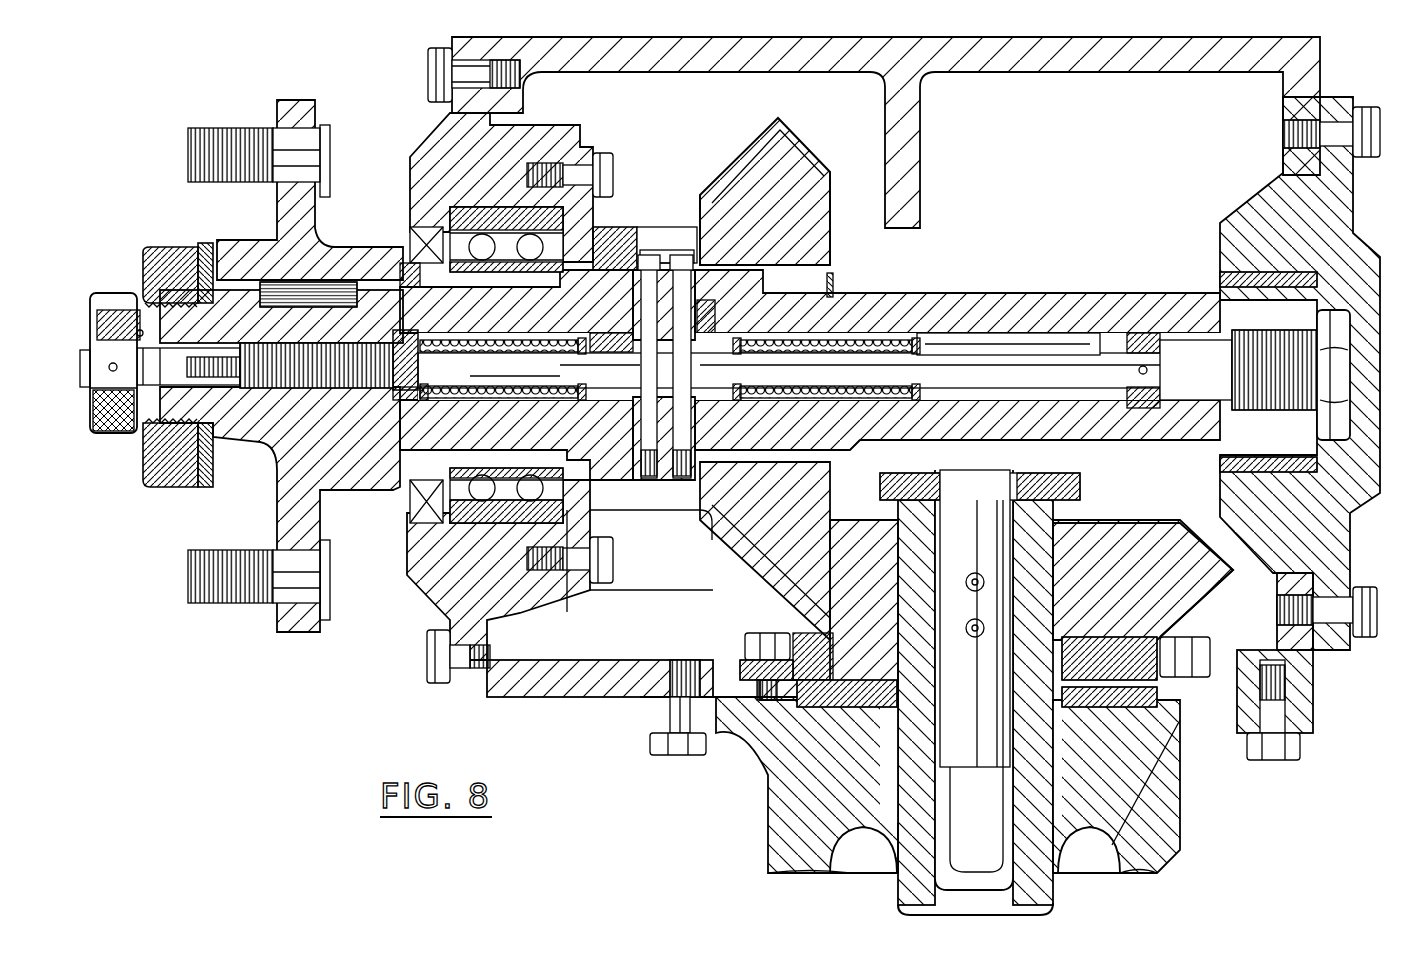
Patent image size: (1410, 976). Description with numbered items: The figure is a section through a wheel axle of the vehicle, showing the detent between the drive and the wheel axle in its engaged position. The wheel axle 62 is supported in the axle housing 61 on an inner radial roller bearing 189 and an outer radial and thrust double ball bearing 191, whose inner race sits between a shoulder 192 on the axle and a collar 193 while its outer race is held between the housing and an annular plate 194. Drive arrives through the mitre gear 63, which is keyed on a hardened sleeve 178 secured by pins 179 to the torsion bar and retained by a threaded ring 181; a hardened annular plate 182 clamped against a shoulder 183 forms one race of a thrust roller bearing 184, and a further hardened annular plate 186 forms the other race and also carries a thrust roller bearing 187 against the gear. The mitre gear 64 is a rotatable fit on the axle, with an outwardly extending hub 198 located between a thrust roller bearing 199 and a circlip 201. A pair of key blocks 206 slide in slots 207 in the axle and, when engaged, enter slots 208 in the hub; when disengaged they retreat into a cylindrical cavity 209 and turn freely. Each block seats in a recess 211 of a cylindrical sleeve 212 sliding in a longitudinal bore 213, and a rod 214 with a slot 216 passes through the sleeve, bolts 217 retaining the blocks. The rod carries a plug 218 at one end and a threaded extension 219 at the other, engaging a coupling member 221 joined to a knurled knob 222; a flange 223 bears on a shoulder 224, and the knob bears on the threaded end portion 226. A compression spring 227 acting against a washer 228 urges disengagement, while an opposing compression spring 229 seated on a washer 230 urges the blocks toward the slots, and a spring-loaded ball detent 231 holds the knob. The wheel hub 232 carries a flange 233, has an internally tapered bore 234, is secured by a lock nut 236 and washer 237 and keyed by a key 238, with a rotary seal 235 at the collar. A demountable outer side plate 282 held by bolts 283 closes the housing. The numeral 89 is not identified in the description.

The axle housing 61 is at (580, 700).
The wheel axle 62 is at (1072, 320).
The mitre gear 63 is at (795, 600).
The mitre gear 64 is at (740, 560).
The bore tube 89 is at (1000, 650).
The hardened sleeve 178 is at (1055, 575).
The pins 179 is at (985, 630).
The threaded ring 181 is at (1080, 490).
The hardened annular plate 182 is at (800, 710).
The shoulder 183 is at (865, 708).
The thrust roller bearing 184 is at (833, 672).
The hardened annular plate 186 is at (835, 655).
The thrust roller bearing 187 is at (812, 633).
The radial roller bearing 189 is at (1240, 285).
The radial and thrust double ball bearing 191 is at (470, 222).
The shoulder 192 is at (540, 195).
The collar 193 is at (392, 492).
The annular plate 194 is at (605, 165).
The hub 198 is at (640, 232).
The thrust roller bearing 199 is at (612, 228).
The circlip 201 is at (832, 274).
The key blocks 206 is at (636, 423).
The slots 207 is at (770, 310).
The slots 208 is at (652, 480).
The cylindrical cavity 209 is at (805, 262).
The recess 211 is at (760, 312).
The cylindrical sleeve 212 is at (615, 318).
The longitudinal bore 213 is at (825, 400).
The rod 214 is at (1005, 360).
The slot 216 is at (560, 398).
The bolts 217 is at (695, 420).
The plug 218 is at (1138, 332).
The threaded extension 219 is at (340, 388).
The coupling member 221 is at (262, 386).
The knurled knob 222 is at (120, 435).
The flange 223 is at (405, 330).
The shoulder 224 is at (400, 398).
The threaded end portion 226 is at (168, 465).
The compression spring 227 is at (505, 340).
The washer 228 is at (426, 398).
The compression spring 229 is at (870, 340).
The washer 230 is at (935, 345).
The spring-loaded ball detent 231 is at (122, 310).
The wheel hub 232 is at (365, 262).
The flange 233 is at (280, 205).
The internally tapered bore 234 is at (288, 432).
The rotary seal 235 is at (398, 512).
The lock nut 236 is at (178, 248).
The washer 237 is at (205, 243).
The key 238 is at (310, 284).
The outer side plate 282 is at (430, 592).
The bolts 283 is at (432, 58).